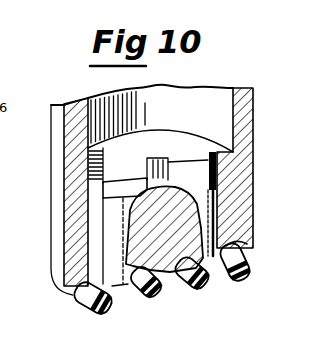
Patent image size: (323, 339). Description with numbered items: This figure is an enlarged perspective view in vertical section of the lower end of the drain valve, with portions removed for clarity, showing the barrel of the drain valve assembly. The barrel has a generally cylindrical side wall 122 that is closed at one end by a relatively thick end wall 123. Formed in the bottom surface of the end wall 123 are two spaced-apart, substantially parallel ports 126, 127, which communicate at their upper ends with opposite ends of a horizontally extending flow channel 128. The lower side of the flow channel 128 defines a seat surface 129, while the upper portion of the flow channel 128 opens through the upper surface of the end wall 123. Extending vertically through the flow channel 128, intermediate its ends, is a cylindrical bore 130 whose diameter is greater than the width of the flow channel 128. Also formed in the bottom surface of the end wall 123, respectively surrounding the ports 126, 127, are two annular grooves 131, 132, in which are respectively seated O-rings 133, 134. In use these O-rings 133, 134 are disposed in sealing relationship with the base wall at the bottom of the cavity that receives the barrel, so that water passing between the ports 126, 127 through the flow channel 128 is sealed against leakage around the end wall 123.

The side wall 122 is at (72, 106).
The end wall 123 is at (76, 243).
The port 126 is at (216, 207).
The port 127 is at (104, 256).
The flow channel 128 is at (212, 165).
The seat surface 129 is at (103, 197).
The cylindrical bore 130 is at (163, 158).
The annular groove 131 is at (246, 245).
The annular groove 132 is at (73, 298).
The O-ring 133 is at (234, 282).
The O-ring 134 is at (154, 298).